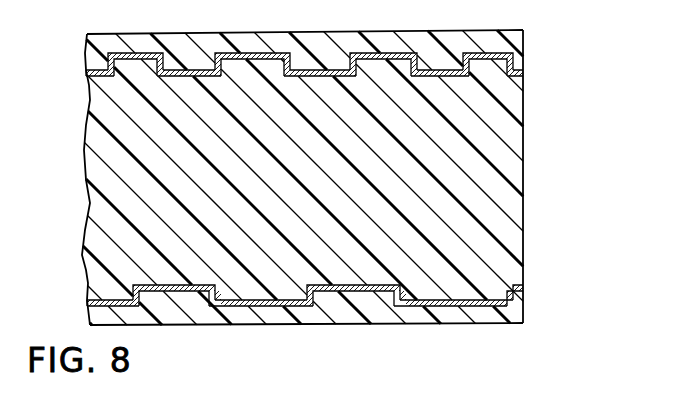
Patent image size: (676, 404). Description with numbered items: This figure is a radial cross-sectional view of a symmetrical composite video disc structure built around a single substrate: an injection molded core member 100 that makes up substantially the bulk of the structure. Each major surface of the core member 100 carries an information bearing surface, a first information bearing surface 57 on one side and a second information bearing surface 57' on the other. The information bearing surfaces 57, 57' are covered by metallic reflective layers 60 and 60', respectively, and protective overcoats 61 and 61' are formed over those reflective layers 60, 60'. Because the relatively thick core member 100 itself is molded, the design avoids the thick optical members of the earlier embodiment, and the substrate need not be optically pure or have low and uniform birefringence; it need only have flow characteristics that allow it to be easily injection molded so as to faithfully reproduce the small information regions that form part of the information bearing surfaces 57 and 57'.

The injection molded core member 100 is at (513, 200).
The reflective layer 60 is at (338, 59).
The first information bearing surface 57 is at (335, 93).
The protective overcoat 61 is at (339, 17).
The reflective layer 60' is at (351, 291).
The second information bearing surface 57' is at (342, 269).
The protective overcoat 61' is at (336, 331).